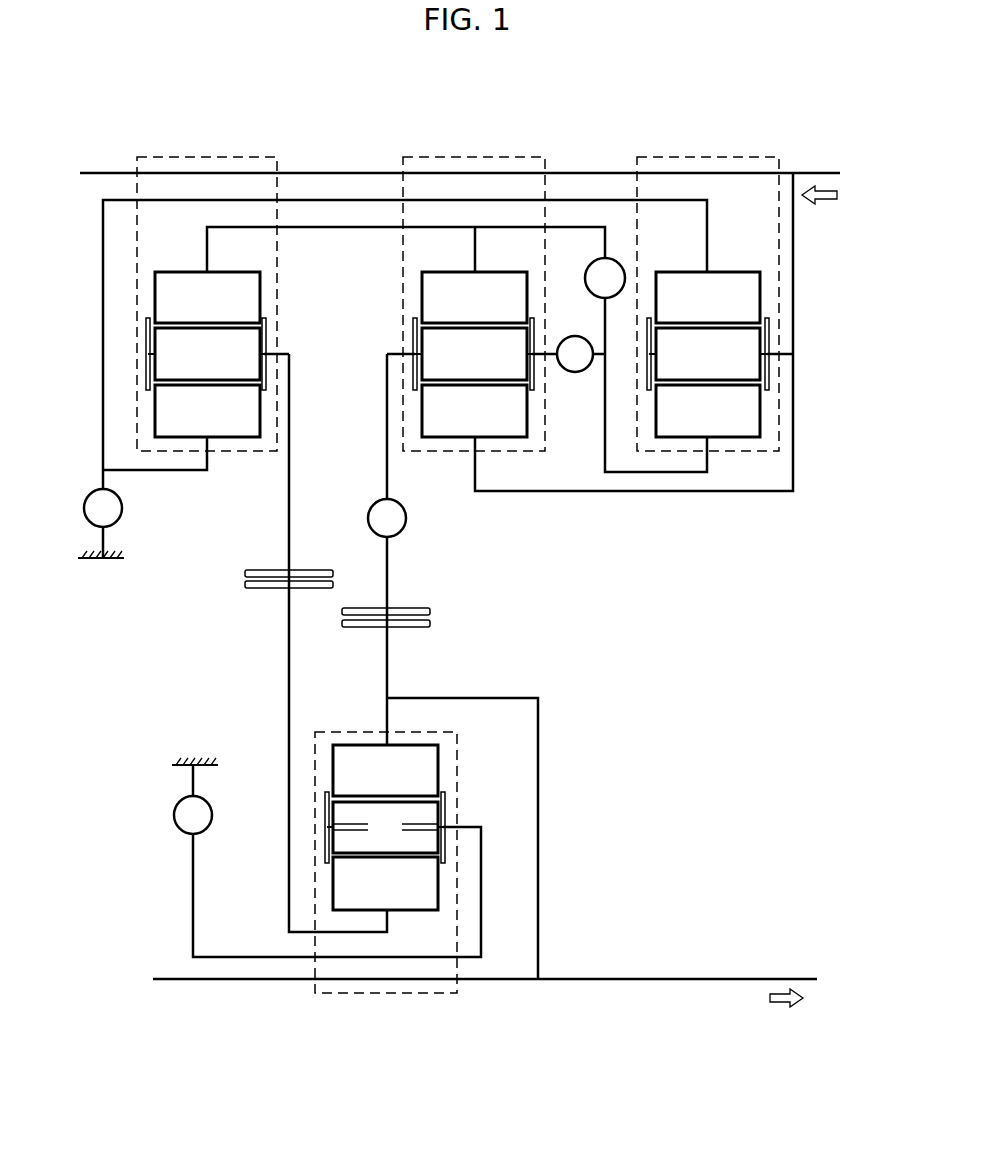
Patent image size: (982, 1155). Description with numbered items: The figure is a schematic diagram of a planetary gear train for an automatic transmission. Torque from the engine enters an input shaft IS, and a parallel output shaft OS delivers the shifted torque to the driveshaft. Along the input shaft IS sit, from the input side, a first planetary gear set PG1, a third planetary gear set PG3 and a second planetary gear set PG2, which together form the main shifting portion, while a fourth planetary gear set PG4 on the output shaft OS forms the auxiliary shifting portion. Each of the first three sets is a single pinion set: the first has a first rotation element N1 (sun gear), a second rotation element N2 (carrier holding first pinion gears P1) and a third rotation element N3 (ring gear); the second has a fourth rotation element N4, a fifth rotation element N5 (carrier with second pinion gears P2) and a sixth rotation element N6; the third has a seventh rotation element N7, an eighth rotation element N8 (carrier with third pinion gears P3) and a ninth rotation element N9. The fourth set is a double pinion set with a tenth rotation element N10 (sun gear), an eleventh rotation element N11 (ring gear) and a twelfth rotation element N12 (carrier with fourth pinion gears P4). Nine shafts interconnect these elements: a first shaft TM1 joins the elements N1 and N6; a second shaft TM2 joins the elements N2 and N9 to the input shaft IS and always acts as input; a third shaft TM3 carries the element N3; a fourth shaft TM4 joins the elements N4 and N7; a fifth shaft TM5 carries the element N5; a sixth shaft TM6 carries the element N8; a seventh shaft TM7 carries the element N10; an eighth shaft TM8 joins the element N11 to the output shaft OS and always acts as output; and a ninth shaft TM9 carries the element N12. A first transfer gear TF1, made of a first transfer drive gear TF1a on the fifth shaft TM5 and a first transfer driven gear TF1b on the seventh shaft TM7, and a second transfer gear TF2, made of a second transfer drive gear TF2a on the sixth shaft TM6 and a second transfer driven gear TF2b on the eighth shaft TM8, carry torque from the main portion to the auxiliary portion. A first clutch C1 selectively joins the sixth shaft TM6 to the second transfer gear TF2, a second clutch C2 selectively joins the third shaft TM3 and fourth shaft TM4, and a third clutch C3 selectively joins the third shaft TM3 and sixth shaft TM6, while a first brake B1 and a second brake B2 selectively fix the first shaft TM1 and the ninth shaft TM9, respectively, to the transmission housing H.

The input shaft IS is at (810, 173).
The output shaft OS is at (703, 1013).
The first planetary gear set PG1 is at (740, 108).
The second planetary gear set PG2 is at (240, 108).
The third planetary gear set PG3 is at (508, 108).
The fourth planetary gear set PG4 is at (373, 1048).
The first rotation element N1 is at (708, 297).
The second rotation element N2 is at (805, 372).
The third rotation element N3 is at (708, 411).
The fourth rotation element N4 is at (207, 297).
The fifth rotation element N5 is at (305, 341).
The sixth rotation element N6 is at (207, 411).
The seventh rotation element N7 is at (474, 297).
The eighth rotation element N8 is at (415, 336).
The ninth rotation element N9 is at (474, 411).
The tenth rotation element N10 is at (385, 883).
The eleventh rotation element N11 is at (385, 770).
The twelfth rotation element N12 is at (327, 825).
The first pinion gears P1 is at (708, 354).
The second pinion gears P2 is at (206, 354).
The third pinion gears P3 is at (473, 354).
The fourth pinion gears P4 is at (385, 827).
The first shaft TM1 is at (307, 200).
The second shaft TM2 is at (752, 545).
The third shaft TM3 is at (605, 450).
The fourth shaft TM4 is at (373, 227).
The fifth shaft TM5 is at (312, 537).
The sixth shaft TM6 is at (387, 475).
The seventh shaft TM7 is at (289, 897).
The eighth shaft TM8 is at (567, 683).
The ninth shaft TM9 is at (497, 797).
The first clutch C1 is at (387, 518).
The second clutch C2 is at (605, 278).
The third clutch C3 is at (562, 354).
The first brake B1 is at (103, 514).
The second brake B2 is at (193, 799).
The first transfer gear TF1 is at (232, 578).
The first transfer drive gear TF1a is at (225, 557).
The first transfer driven gear TF1b is at (256, 596).
The second transfer gear TF2 is at (446, 621).
The second transfer drive gear TF2a is at (462, 602).
The second transfer driven gear TF2b is at (430, 623).
The transmission housing H is at (115, 593).